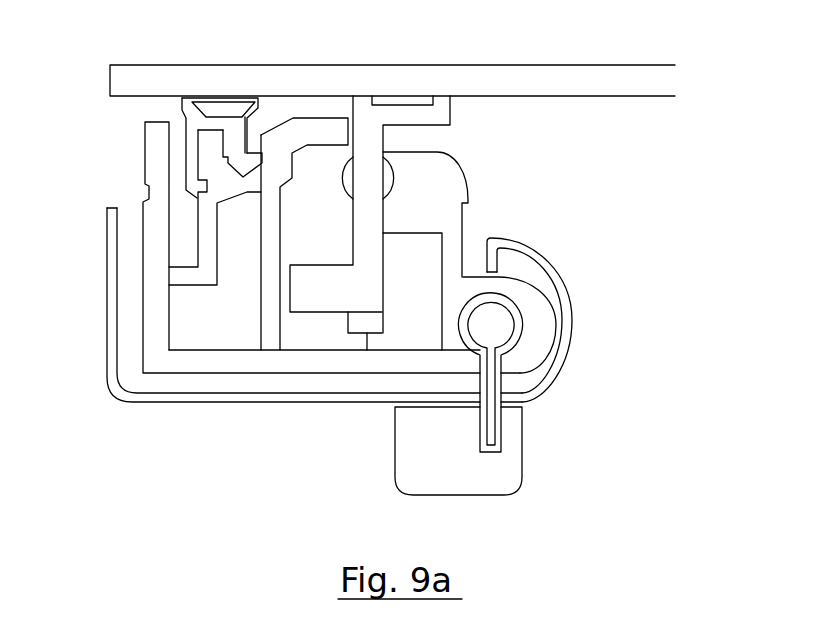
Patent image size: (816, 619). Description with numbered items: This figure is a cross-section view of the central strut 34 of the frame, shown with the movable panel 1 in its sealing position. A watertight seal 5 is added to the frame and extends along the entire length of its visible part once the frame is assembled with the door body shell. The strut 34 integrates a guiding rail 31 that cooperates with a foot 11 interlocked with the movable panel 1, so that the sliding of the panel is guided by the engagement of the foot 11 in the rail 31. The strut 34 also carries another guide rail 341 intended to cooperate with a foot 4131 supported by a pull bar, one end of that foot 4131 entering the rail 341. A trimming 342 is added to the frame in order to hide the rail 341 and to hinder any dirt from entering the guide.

The movable panel 1 is at (620, 82).
The watertight seal 5 is at (235, 98).
The central strut 34 is at (145, 153).
The trimming 342 is at (107, 330).
The guide rail 341 is at (522, 316).
The foot 11 is at (368, 230).
The guiding rail 31 is at (393, 175).
The foot 4131 is at (437, 437).